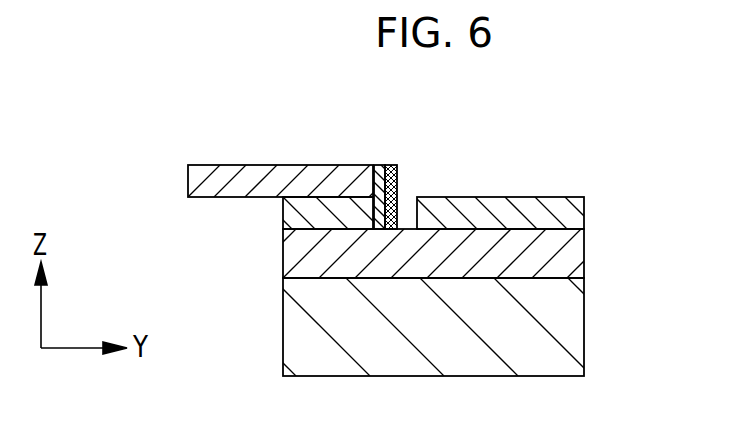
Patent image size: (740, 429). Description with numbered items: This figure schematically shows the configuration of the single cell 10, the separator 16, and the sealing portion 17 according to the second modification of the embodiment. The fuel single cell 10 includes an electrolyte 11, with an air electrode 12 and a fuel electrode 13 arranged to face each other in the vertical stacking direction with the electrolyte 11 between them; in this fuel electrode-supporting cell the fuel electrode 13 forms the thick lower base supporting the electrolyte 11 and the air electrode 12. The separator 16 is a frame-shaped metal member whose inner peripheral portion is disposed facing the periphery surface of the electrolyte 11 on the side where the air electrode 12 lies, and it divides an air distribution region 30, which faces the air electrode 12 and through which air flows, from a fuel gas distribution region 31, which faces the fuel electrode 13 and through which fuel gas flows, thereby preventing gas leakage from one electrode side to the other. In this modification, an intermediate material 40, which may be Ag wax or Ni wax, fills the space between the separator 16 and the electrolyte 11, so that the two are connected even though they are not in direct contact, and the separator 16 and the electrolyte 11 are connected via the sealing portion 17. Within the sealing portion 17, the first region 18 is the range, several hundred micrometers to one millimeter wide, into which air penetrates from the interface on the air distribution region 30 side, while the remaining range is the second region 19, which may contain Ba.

The fuel single cell 10 is at (443, 286).
The electrolyte 11 is at (568, 253).
The air electrode 12 is at (528, 213).
The fuel electrode 13 is at (568, 317).
The separator 16 is at (225, 177).
The sealing portion 17 is at (386, 147).
The first region 18 is at (392, 167).
The second region 19 is at (380, 167).
The air distribution region 30 is at (480, 174).
The fuel gas distribution region 31 is at (237, 362).
The intermediate material 40 is at (292, 213).